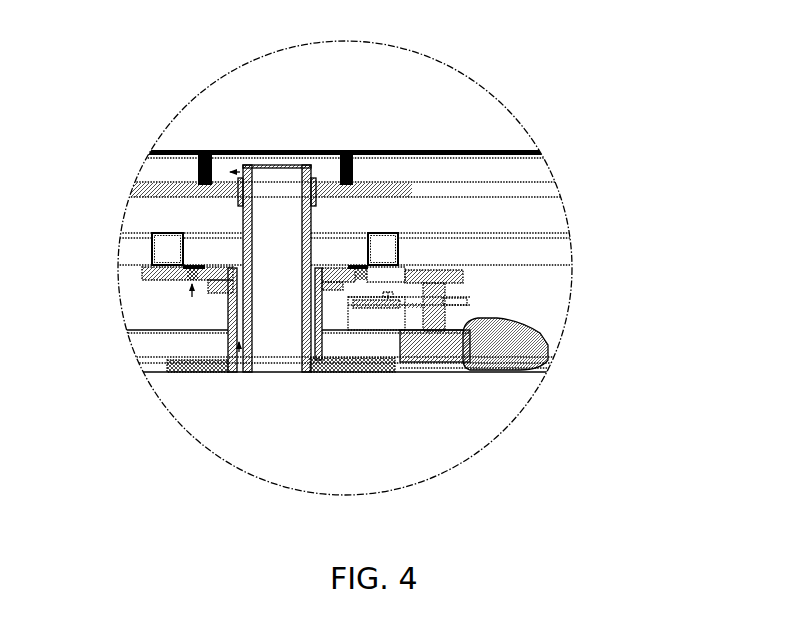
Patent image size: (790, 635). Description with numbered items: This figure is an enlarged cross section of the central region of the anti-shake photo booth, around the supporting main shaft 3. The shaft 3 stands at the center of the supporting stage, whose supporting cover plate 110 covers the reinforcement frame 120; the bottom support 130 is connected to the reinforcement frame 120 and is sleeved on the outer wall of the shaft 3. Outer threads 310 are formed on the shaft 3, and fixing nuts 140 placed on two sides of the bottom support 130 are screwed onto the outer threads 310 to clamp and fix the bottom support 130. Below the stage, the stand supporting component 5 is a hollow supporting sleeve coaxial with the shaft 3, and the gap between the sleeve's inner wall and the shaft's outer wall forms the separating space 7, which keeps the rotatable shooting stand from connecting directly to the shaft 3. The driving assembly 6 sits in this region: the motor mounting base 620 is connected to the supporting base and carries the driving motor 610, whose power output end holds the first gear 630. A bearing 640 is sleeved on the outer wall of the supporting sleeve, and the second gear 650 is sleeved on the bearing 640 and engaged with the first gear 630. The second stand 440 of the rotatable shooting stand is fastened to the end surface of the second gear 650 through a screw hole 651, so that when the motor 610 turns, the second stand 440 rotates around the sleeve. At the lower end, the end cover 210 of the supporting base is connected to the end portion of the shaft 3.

The supporting main shaft 3 is at (243, 225).
The stand supporting component 5 is at (227, 312).
The driving assembly 6 is at (660, 228).
The separating space 7 is at (233, 373).
The supporting cover plate 110 is at (437, 152).
The reinforcement frame 120 is at (508, 172).
The bottom support 130 is at (380, 183).
The fixing nuts 140 is at (368, 182).
The end cover 210 is at (327, 372).
The outer threads 310 is at (212, 152).
The second stand 440 is at (450, 234).
The driving motor 610 is at (447, 318).
The motor mounting base 620 is at (378, 305).
The first gear 630 is at (470, 280).
The bearing 640 is at (343, 295).
The second gear 650 is at (380, 273).
The screw hole 651 is at (192, 297).